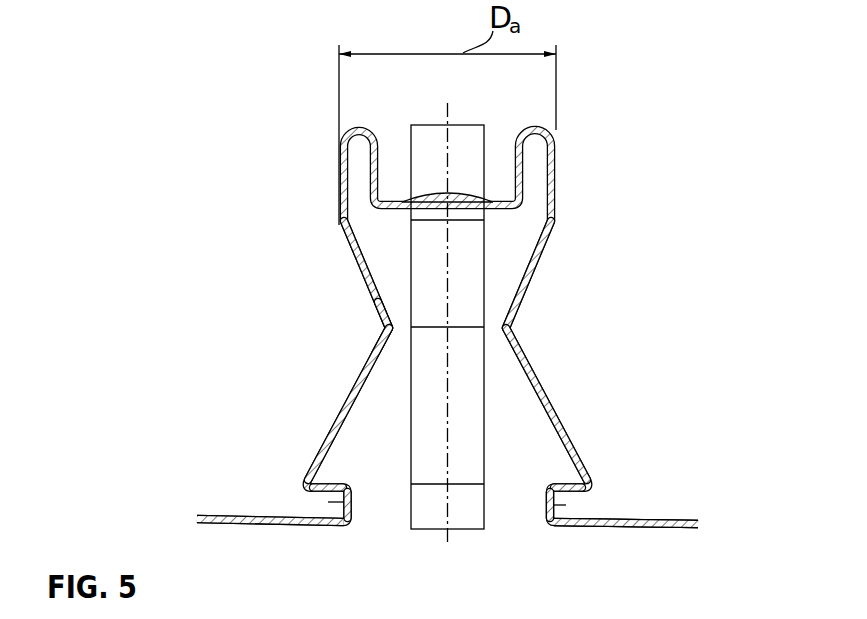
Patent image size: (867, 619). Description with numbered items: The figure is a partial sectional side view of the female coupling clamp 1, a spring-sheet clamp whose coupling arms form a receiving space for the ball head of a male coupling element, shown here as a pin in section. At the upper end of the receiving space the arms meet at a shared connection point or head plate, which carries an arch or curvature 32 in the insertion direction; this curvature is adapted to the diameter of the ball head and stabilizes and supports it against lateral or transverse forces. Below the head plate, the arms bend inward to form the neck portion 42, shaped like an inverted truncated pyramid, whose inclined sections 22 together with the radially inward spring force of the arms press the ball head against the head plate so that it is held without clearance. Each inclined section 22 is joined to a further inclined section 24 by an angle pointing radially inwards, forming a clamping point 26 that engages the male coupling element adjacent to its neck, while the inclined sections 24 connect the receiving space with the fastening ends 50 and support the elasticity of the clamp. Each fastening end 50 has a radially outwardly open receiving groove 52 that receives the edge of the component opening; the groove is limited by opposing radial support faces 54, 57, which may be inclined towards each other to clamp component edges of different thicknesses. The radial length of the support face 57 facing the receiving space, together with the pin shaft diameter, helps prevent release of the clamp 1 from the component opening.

The female coupling clamp 1 is at (637, 122).
The inclined sections 22 is at (361, 273).
The inclined sections 24 is at (334, 418).
The clamping point 26 is at (386, 324).
The curvature 32 is at (457, 194).
The neck portion 42 is at (542, 260).
The fastening end 50 is at (640, 536).
The receiving groove 52 is at (352, 508).
The radial support face 54 is at (238, 515).
The radial support face 57 is at (329, 483).